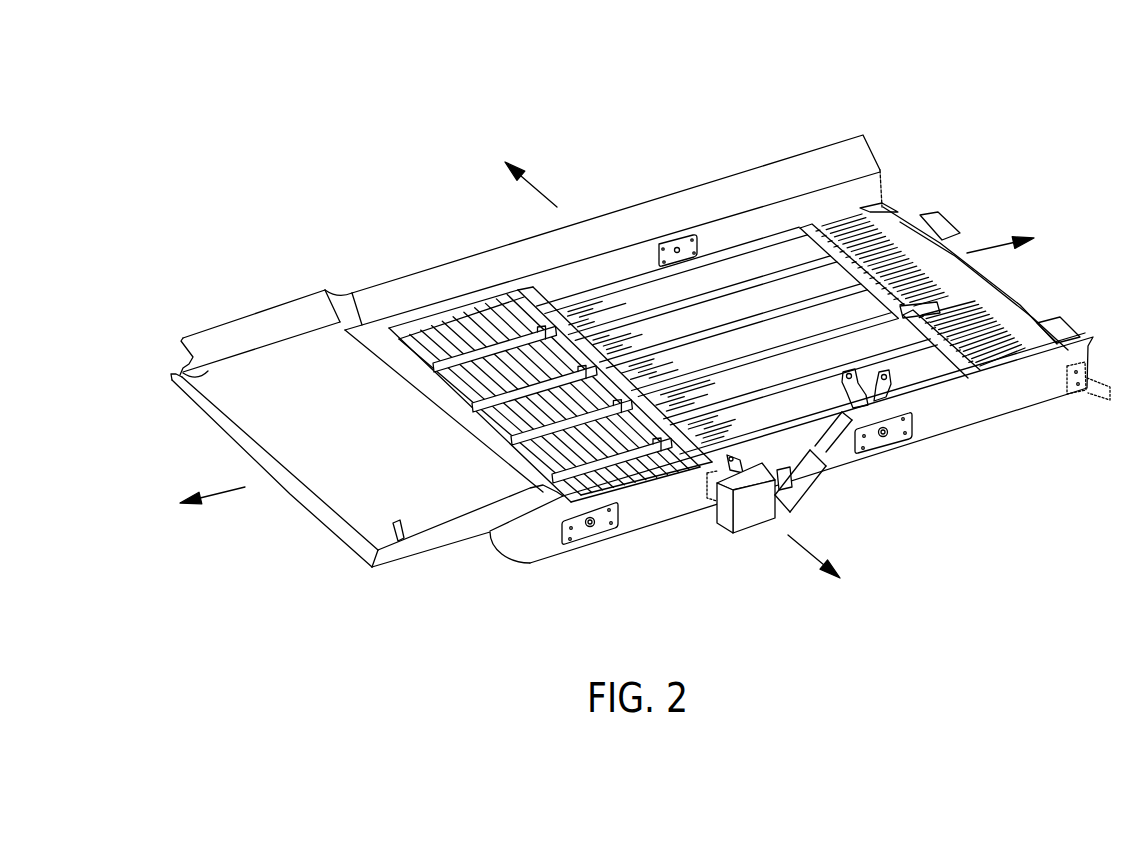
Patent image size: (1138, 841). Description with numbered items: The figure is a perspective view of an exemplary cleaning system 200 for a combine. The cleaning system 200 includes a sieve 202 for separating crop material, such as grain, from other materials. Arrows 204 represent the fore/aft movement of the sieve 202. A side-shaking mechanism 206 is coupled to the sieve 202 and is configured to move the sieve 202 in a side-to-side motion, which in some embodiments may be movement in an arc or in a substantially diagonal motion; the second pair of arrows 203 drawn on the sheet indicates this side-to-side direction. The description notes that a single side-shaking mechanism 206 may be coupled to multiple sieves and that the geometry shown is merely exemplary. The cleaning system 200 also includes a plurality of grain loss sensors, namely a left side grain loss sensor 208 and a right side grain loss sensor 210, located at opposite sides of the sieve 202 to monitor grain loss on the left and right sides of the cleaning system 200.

The cleaning system 200 is at (651, 349).
The sieve 202 is at (910, 258).
The direction of movement (longitudinal) 203 is at (540, 188).
The arrows 204 is at (223, 495).
The side-shaking mechanism 206 is at (746, 528).
The left side grain loss sensor 208 is at (1057, 332).
The right side grain loss sensor 210 is at (929, 222).